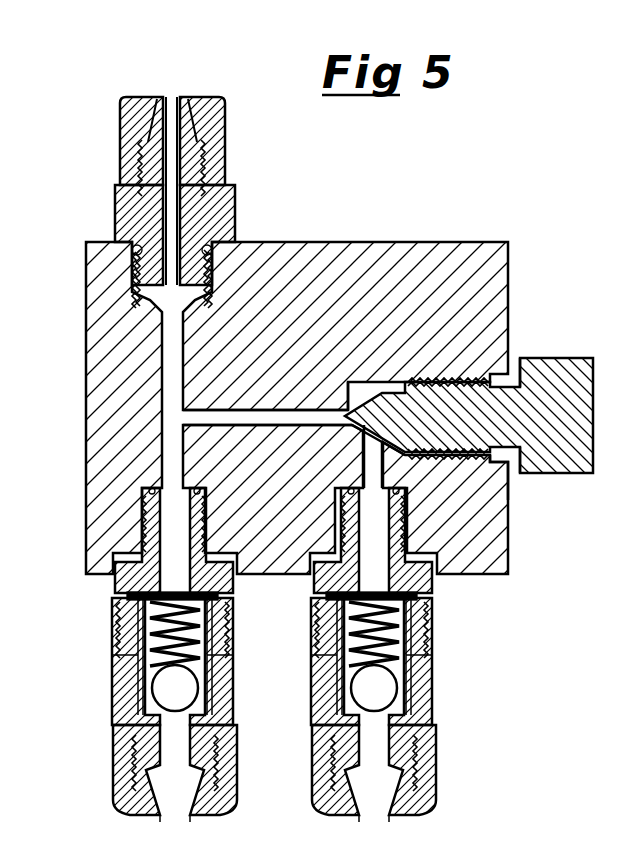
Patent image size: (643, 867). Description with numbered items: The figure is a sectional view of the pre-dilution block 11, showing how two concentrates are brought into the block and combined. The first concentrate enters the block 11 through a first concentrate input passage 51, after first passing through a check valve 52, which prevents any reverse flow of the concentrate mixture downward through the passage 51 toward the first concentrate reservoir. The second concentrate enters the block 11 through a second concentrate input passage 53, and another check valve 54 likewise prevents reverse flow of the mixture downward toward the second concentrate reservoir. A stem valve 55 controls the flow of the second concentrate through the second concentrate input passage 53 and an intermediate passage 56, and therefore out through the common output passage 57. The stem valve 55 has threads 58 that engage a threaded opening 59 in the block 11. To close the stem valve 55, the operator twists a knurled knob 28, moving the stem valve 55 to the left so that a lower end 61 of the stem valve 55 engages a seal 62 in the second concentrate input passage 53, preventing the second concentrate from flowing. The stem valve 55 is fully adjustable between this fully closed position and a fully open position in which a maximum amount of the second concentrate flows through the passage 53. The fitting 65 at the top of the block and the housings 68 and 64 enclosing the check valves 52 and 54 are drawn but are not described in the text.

The pre-dilution block 11 is at (467, 151).
The inlet fitting 65 is at (115, 200).
The common output passage 57 is at (182, 212).
The intermediate passage 56 is at (268, 405).
The seal 62 is at (352, 392).
The lower end of the stem valve 61 is at (365, 398).
The threaded opening 59 is at (438, 378).
The stem valve 55 is at (512, 386).
The knurled knob 28 is at (593, 410).
The threads 58 is at (478, 462).
The first concentrate input passage 51 is at (163, 522).
The second concentrate input passage 53 is at (385, 528).
The first check valve housing 68 is at (113, 592).
The second check valve housing 64 is at (440, 583).
The check valve 52 is at (152, 690).
The check valve 54 is at (398, 686).